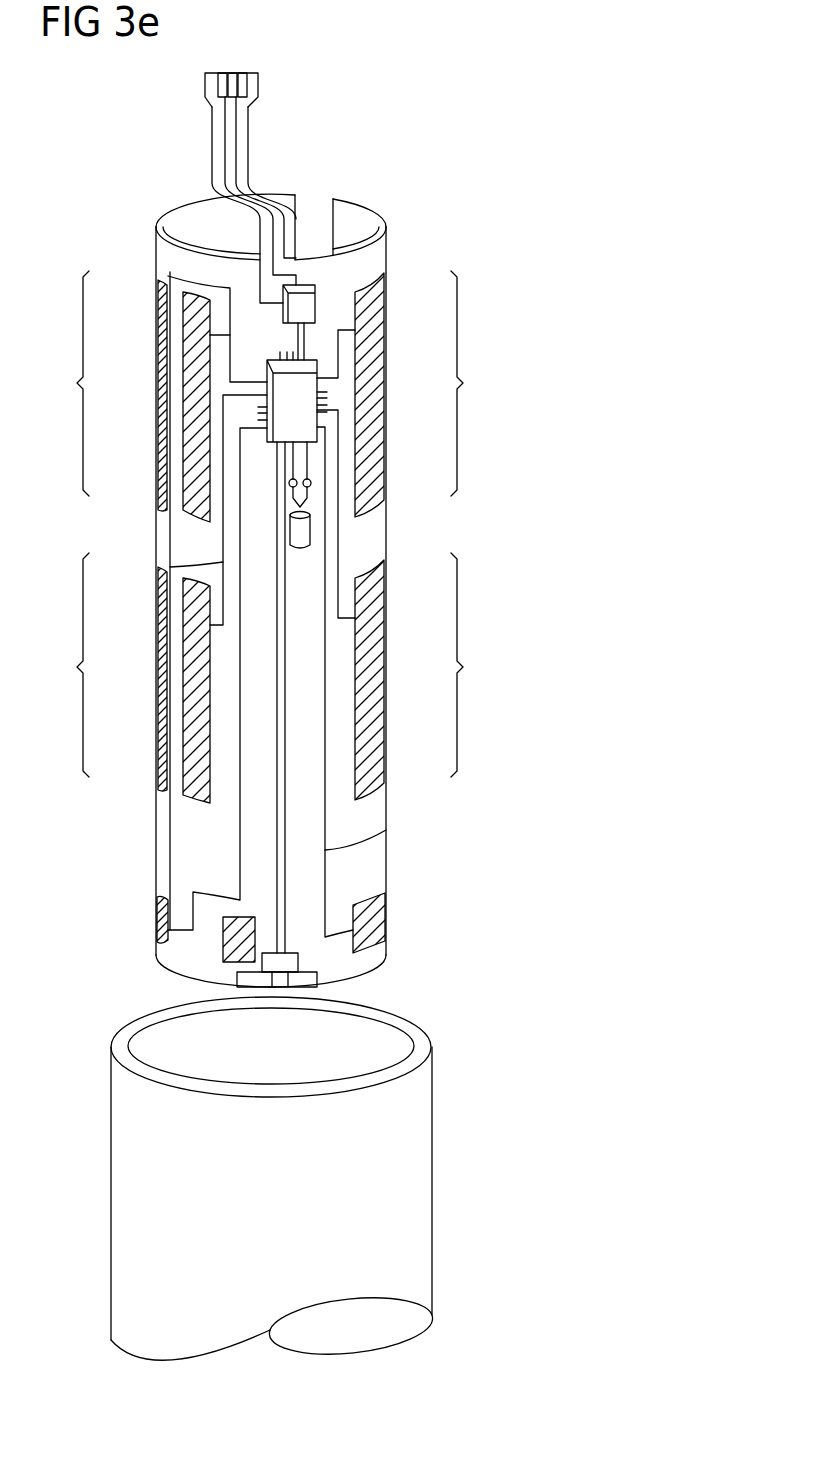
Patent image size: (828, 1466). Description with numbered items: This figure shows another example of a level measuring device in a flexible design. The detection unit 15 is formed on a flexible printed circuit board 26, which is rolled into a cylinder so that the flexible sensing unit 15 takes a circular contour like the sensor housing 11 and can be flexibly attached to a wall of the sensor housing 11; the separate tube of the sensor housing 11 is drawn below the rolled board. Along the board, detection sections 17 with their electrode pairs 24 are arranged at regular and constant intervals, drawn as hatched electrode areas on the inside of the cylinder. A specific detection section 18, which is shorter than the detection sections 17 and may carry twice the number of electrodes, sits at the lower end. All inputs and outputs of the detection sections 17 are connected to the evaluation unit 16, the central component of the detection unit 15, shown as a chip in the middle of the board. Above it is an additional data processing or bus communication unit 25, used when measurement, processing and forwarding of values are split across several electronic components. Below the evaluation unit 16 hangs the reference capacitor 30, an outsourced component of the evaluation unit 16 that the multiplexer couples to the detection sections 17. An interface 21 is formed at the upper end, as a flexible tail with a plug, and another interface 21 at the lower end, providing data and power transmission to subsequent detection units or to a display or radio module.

The sensor housing 11 is at (122, 1148).
The detection unit 15 is at (375, 812).
The evaluation unit 16 is at (300, 423).
The detection section 17 is at (270, 537).
The specific detection section 18 is at (160, 920).
The interface 21 is at (212, 87).
The electrode pair 24 is at (195, 430).
The bus communication unit 25 is at (300, 307).
The printed circuit board 26 is at (376, 209).
The reference capacitor 30 is at (302, 530).